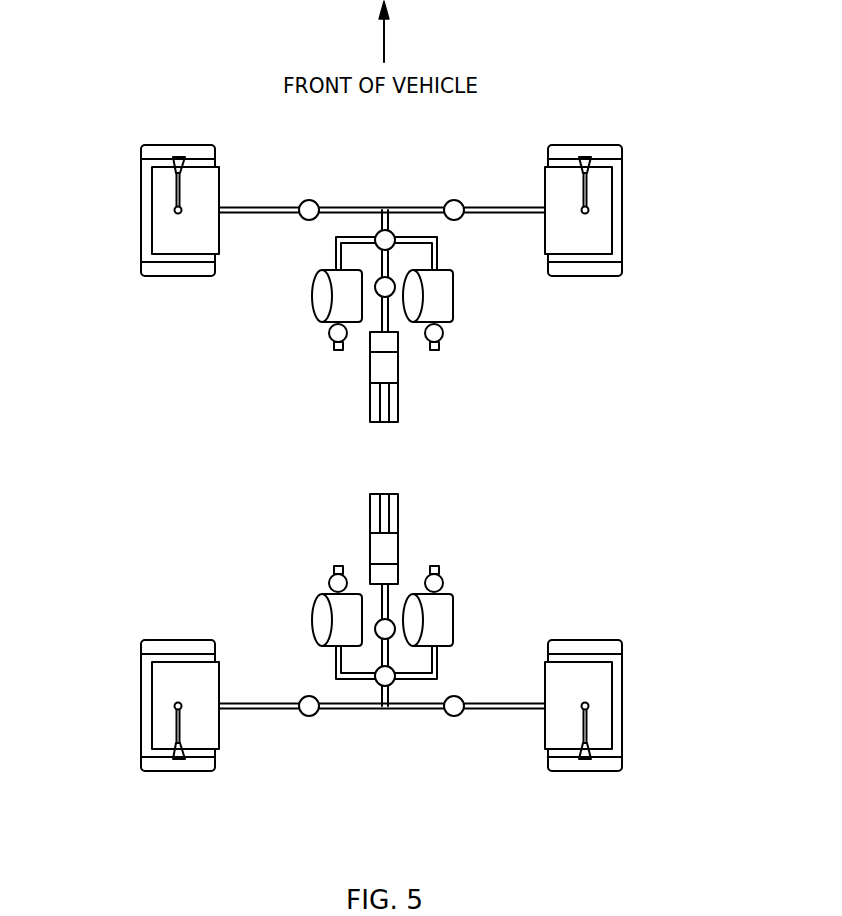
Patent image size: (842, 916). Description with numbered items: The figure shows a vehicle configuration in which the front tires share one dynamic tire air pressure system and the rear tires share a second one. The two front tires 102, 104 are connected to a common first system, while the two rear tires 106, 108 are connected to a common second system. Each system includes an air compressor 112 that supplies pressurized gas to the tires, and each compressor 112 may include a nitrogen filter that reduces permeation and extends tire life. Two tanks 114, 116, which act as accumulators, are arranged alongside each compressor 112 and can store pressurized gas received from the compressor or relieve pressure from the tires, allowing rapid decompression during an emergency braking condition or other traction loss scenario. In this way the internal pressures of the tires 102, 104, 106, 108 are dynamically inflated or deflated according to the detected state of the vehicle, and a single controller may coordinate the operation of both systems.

The tire 102 is at (141, 210).
The tire 104 is at (622, 207).
The tire 106 is at (141, 702).
The tire 108 is at (622, 700).
The air compressor 112 is at (398, 398).
The tank 114 is at (315, 296).
The tank 116 is at (453, 296).